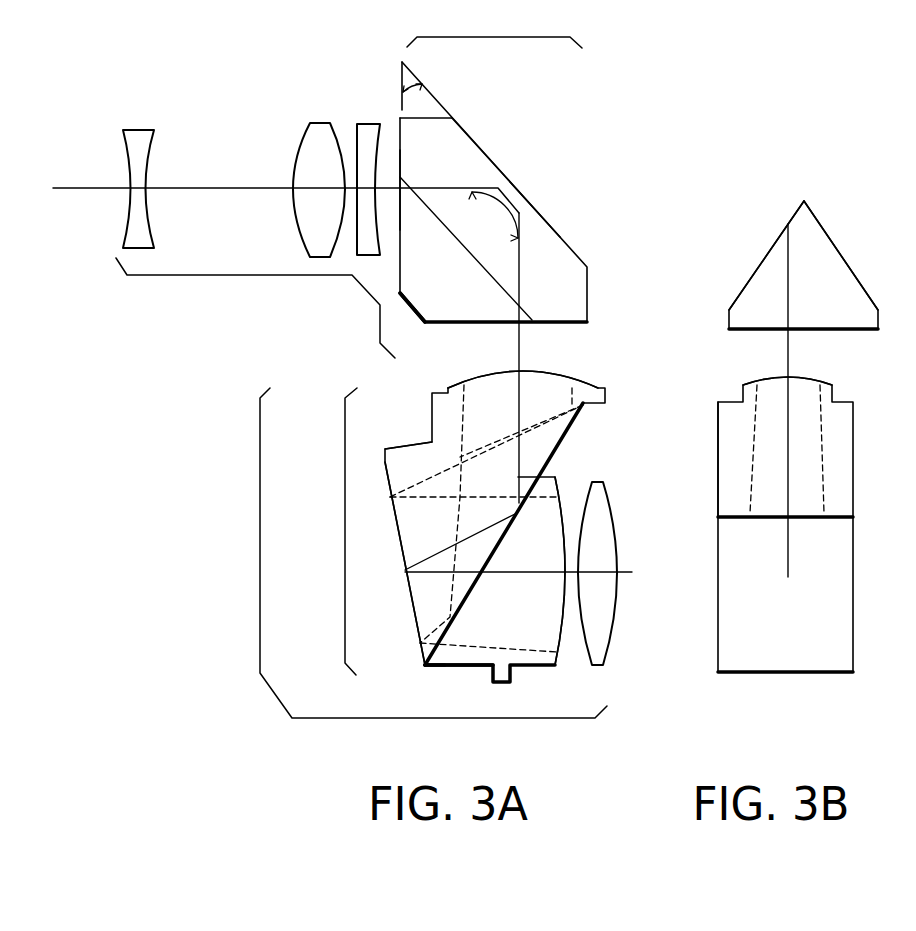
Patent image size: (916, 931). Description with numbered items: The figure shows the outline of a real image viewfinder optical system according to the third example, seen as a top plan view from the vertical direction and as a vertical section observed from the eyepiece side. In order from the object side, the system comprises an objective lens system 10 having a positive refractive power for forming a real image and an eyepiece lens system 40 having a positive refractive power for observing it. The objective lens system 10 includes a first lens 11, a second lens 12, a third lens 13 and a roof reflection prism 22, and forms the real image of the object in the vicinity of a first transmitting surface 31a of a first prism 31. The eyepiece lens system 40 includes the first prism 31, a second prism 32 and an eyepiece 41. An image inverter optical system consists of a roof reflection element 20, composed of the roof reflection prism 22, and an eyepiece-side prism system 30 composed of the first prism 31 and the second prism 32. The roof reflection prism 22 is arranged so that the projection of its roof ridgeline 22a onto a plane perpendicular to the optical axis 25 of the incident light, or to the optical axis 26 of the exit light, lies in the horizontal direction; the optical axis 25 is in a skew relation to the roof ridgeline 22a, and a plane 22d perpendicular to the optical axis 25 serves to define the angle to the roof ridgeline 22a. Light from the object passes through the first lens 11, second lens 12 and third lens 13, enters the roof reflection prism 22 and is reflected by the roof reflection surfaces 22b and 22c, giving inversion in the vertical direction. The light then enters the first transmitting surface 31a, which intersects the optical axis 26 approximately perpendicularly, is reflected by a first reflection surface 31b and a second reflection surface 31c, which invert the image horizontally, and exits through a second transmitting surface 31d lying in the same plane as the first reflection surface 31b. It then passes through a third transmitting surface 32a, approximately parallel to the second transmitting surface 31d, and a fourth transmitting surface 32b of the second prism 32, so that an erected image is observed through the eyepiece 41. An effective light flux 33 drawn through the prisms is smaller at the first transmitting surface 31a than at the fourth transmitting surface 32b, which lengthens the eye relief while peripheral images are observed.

In FIG. 3A, the objective lens system 10 is at (255, 212).
In FIG. 3A, the first lens 11 is at (137, 128).
In FIG. 3A, the second lens 12 is at (318, 123).
In FIG. 3A, the third lens 13 is at (368, 123).
In FIG. 3A, the roof reflection element 20 is at (582, 190).
In FIG. 3A, the roof reflection prism 22 is at (568, 283).
In FIG. 3B, the roof reflection prism 22 is at (767, 285).
In FIG. 3A, the roof ridgeline 22a is at (803, 200).
In FIG. 3B, the roof reflection surface 22b is at (782, 237).
In FIG. 3B, the roof reflection surface 22c is at (825, 228).
In FIG. 3A, the plane perpendicular to the optical axis of the incident light 22d is at (392, 283).
In FIG. 3A, the optical axis of the incident light 25 is at (388, 187).
In FIG. 3A, the optical axis of the exit light 26 is at (787, 350).
In FIG. 3A, the eyepiece-side prism system 30 is at (561, 560).
In FIG. 3A, the first prism 31 is at (540, 407).
In FIG. 3B, the first prism 31 is at (785, 447).
In FIG. 3A, the first transmitting surface 31a is at (753, 382).
In FIG. 3B, the first transmitting surface 31a is at (787, 381).
In FIG. 3A, the first reflection surface 31b is at (522, 442).
In FIG. 3A, the second reflection surface 31c is at (405, 573).
In FIG. 3A, the second transmitting surface 31d is at (420, 652).
In FIG. 3A, the second prism 32 is at (517, 684).
In FIG. 3B, the second prism 32 is at (732, 645).
In FIG. 3A, the third transmitting surface 32a is at (448, 637).
In FIG. 3A, the fourth transmitting surface 32b is at (555, 650).
In FIG. 3A, the effective light flux 33 is at (460, 457).
In FIG. 3B, the effective light flux 33 is at (787, 449).
In FIG. 3A, the eyepiece lens system 40 is at (524, 560).
In FIG. 3A, the eyepiece 41 is at (590, 638).